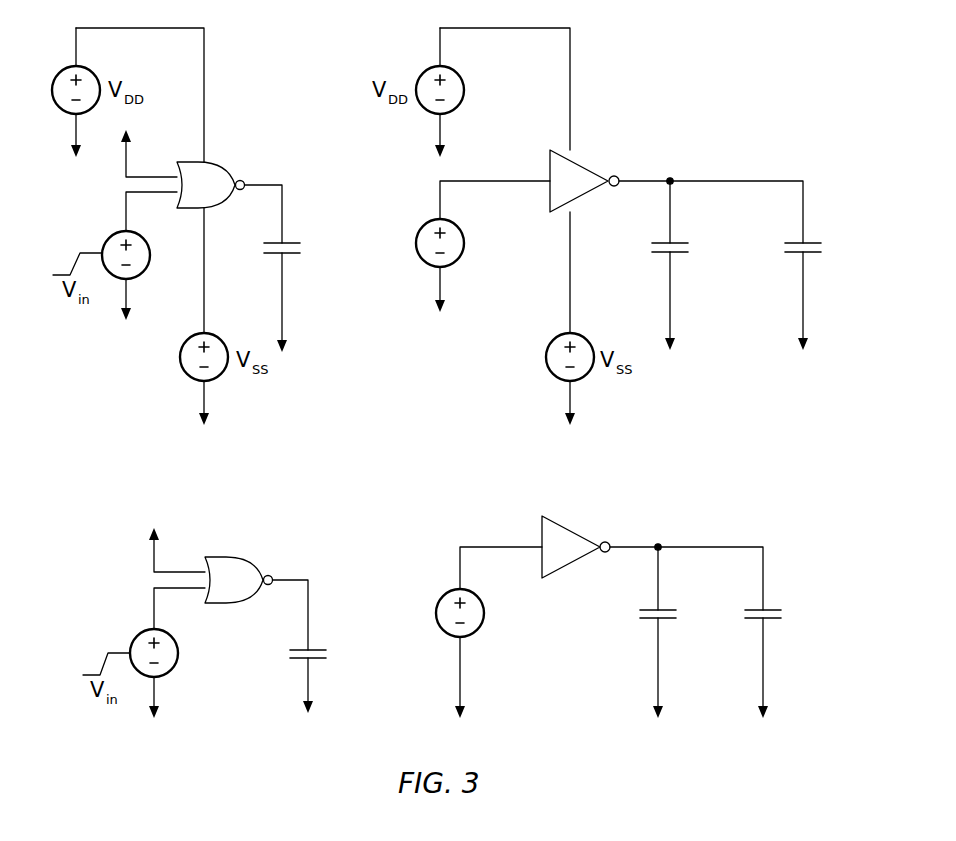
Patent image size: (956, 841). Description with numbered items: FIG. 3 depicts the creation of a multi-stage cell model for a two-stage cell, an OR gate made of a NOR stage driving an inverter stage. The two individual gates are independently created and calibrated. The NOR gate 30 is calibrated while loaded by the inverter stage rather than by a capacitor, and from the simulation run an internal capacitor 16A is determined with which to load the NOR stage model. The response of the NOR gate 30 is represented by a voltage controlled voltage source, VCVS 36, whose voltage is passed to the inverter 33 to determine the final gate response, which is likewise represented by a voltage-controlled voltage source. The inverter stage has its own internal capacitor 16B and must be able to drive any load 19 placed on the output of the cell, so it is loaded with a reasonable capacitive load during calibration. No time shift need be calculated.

The NOR gate 30 is at (221, 167).
The inverter 33 is at (587, 167).
The voltage controlled voltage source (VCVS) 36 is at (453, 266).
The internal capacitance of NOR gate / load capacitance 16A is at (289, 254).
The internal capacitance of inverter 16B is at (678, 253).
The load 19 is at (811, 253).